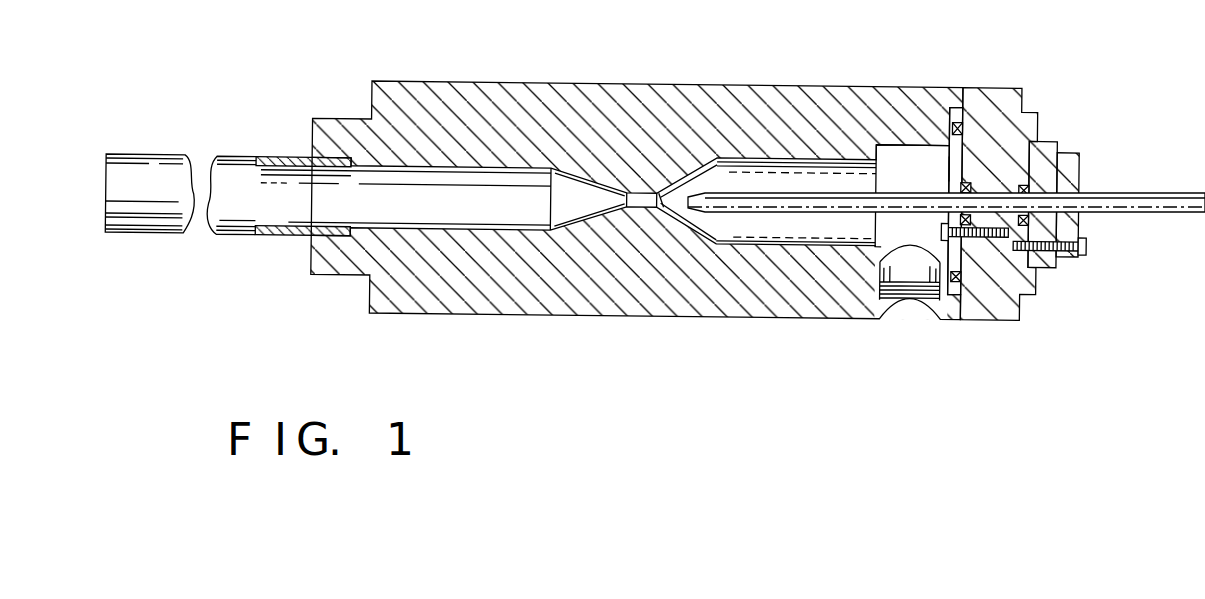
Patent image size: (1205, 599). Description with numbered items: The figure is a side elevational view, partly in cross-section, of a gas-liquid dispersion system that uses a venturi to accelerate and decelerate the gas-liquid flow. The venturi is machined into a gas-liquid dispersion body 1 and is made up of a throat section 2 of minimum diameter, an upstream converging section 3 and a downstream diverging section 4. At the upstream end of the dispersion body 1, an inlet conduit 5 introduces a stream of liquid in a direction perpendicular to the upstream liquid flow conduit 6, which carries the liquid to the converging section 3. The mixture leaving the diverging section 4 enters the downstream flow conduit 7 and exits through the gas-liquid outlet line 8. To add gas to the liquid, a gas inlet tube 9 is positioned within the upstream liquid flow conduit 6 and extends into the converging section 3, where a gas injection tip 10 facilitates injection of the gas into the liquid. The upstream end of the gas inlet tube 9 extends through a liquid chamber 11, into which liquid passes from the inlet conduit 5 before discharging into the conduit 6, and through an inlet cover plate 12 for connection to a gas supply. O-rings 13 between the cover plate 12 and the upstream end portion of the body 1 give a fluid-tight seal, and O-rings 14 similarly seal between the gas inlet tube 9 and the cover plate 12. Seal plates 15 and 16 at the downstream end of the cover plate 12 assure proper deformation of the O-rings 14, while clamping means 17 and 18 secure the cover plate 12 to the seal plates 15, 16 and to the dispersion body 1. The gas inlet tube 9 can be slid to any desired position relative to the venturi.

The gas-liquid dispersion body 1 is at (528, 81).
The throat section 2 is at (640, 188).
The upstream converging section 3 is at (684, 192).
The downstream diverging section 4 is at (588, 175).
The inlet conduit 5 is at (910, 292).
The upstream liquid flow conduit 6 is at (777, 167).
The downstream flow conduit 7 is at (451, 186).
The gas-liquid outlet line 8 is at (285, 238).
The gas inlet tube 9 is at (778, 213).
The gas injection tip 10 is at (697, 206).
The liquid chamber 11 is at (889, 149).
The inlet cover plate 12 is at (1012, 112).
The O-rings 13 is at (962, 101).
The O-rings 14 is at (970, 181).
The seal plate 15 is at (955, 165).
The seal plate 16 is at (1045, 150).
The clamping means 17 is at (945, 220).
The clamping means 18 is at (1067, 242).